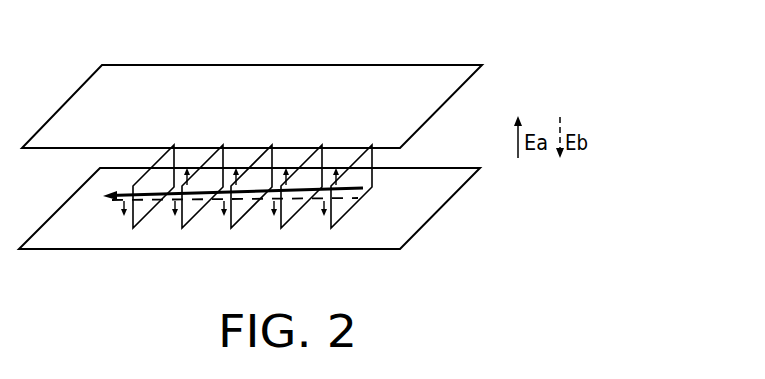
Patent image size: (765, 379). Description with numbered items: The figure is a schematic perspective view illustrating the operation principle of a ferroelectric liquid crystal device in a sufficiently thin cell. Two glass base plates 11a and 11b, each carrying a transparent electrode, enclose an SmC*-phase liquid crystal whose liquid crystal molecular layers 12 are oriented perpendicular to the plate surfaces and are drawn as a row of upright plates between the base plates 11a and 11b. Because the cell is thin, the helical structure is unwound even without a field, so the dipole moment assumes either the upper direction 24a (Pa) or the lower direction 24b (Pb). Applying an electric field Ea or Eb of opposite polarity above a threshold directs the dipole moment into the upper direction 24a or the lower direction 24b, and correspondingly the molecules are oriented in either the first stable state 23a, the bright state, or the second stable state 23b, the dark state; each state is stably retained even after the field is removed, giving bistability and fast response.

The base plate 11a is at (445, 72).
The base plate 11b is at (423, 207).
The liquid crystal molecular layers 12 is at (365, 162).
The first stable state 23a is at (147, 193).
The second stable state 23b is at (137, 203).
The upper direction 24a is at (137, 180).
The lower direction 24b is at (123, 217).